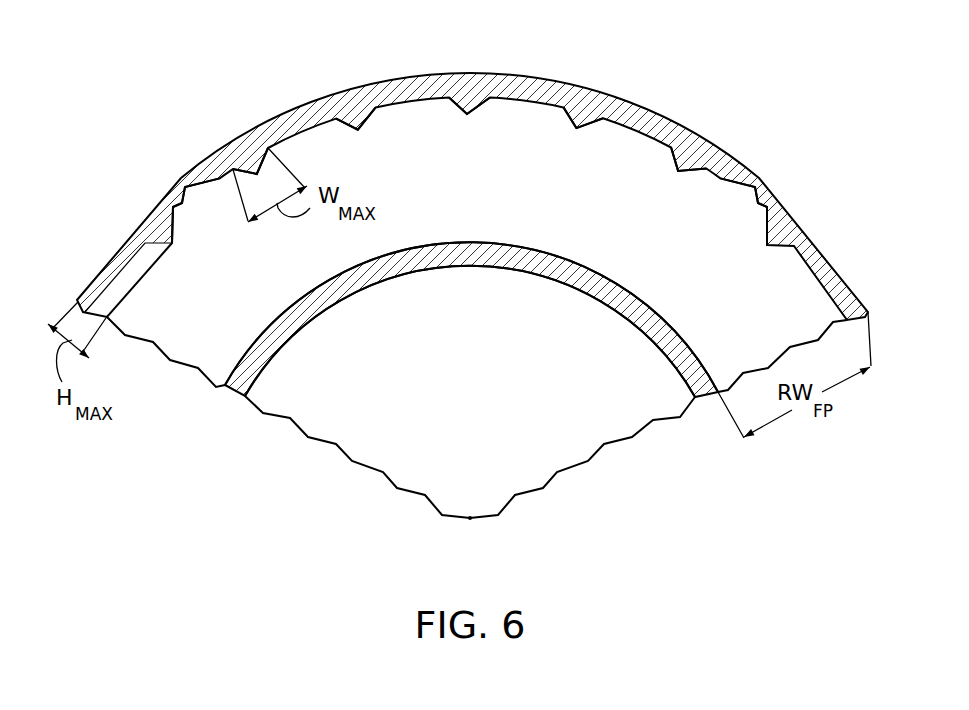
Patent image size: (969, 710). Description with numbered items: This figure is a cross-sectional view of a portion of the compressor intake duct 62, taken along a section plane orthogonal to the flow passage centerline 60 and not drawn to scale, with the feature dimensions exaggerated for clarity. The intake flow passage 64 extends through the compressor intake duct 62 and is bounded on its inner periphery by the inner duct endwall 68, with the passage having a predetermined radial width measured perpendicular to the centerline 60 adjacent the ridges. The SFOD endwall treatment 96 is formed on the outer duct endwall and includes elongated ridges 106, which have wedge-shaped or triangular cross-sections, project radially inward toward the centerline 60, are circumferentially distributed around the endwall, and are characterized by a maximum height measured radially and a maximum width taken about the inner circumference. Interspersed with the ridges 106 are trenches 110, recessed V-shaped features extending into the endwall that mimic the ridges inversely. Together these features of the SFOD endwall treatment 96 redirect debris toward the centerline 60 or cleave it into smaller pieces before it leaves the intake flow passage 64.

The flow passage centerline 60 is at (470, 519).
The compressor intake duct 62 is at (353, 297).
The intake flow passage 64 is at (487, 228).
The inner duct endwall 68 is at (465, 257).
The SFOD endwall treatment 96 is at (452, 115).
The elongated ridges 106 is at (142, 242).
The trenches 110 is at (191, 193).